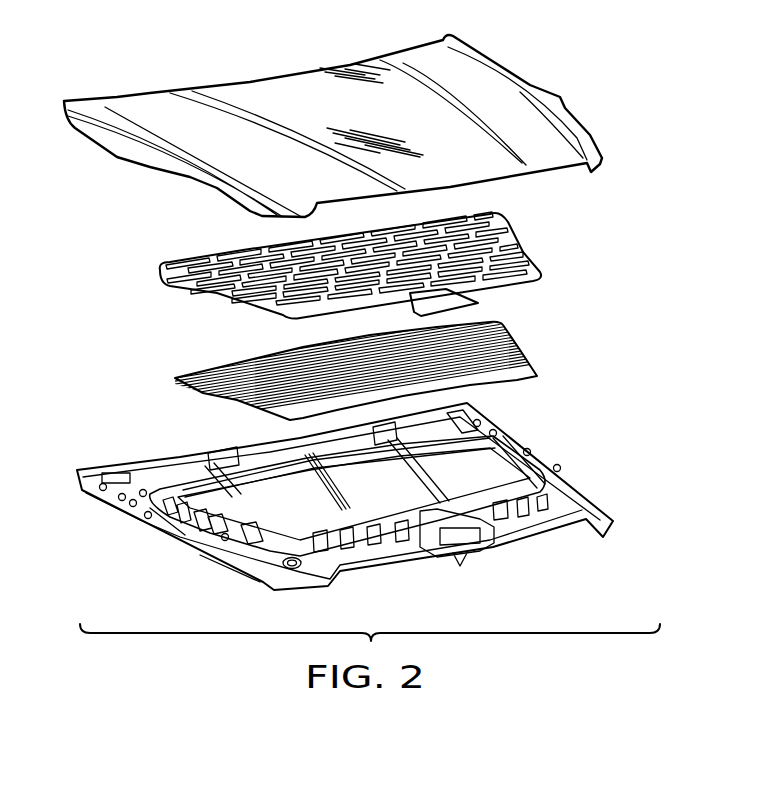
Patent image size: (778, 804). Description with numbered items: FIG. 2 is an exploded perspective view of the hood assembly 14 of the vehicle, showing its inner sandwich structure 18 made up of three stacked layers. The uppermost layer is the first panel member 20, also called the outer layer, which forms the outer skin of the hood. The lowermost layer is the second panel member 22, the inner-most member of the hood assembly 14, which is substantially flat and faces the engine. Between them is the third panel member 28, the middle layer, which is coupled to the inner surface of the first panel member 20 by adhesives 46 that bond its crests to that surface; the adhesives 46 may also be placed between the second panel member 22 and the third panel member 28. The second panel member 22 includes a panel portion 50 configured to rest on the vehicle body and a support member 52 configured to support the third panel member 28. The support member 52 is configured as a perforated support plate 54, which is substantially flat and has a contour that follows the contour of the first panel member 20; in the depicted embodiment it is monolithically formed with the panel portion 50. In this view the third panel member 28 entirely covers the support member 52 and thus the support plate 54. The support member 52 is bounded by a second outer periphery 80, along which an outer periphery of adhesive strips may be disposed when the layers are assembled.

The hood assembly 14 is at (553, 14).
The inner sandwich structure 18 is at (620, 268).
The first panel member 20 is at (531, 86).
The second panel member 22 is at (575, 463).
The third panel member 28 is at (523, 352).
The adhesives 46 is at (523, 248).
The panel portion 50 is at (237, 560).
The support member 52 is at (500, 437).
The perforated support plate 54 is at (317, 467).
The second outer periphery 80 is at (180, 537).